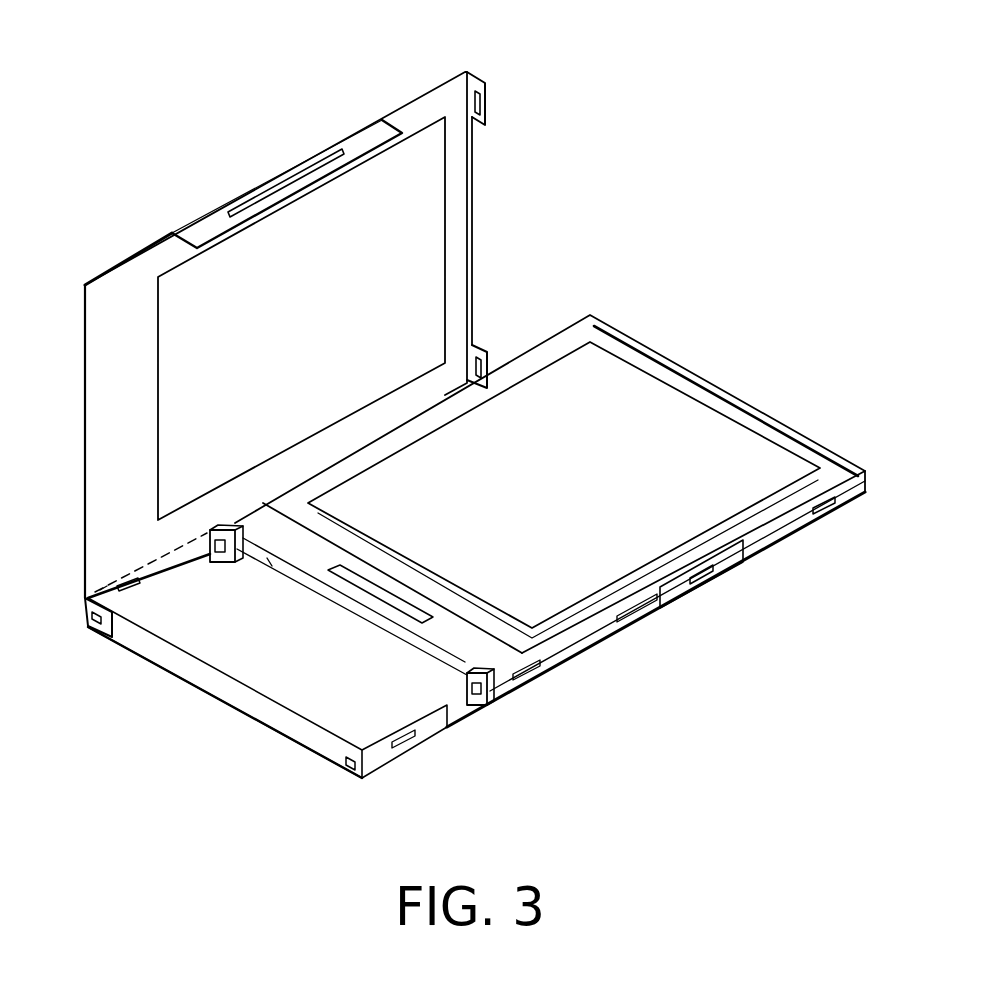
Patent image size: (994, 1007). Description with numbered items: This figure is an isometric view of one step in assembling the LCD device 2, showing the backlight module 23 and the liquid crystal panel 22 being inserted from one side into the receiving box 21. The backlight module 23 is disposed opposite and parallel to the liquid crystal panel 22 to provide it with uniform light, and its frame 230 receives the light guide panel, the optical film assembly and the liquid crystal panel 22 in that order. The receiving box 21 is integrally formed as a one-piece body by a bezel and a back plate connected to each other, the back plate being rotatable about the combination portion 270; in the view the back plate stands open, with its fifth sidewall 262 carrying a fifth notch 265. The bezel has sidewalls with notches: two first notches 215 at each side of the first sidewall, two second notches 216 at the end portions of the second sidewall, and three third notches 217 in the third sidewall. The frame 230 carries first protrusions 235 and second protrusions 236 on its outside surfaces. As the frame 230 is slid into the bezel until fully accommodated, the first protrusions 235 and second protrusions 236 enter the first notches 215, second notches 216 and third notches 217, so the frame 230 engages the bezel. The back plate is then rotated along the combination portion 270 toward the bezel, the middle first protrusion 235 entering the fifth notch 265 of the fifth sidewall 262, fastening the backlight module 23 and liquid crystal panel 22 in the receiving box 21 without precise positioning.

The LCD device 2 is at (435, 28).
The receiving box 21 is at (334, 354).
The liquid crystal panel 22 is at (695, 413).
The backlight module 23 is at (476, 557).
The first notches 215 is at (702, 580).
The second notches 216 is at (352, 763).
The third notches 217 is at (130, 588).
The frame 230 is at (567, 635).
The first protrusions 235 is at (826, 510).
The second protrusions 236 is at (498, 697).
The fifth sidewall 262 is at (360, 140).
The fifth notch 265 is at (252, 200).
The combination portion 270 is at (103, 590).